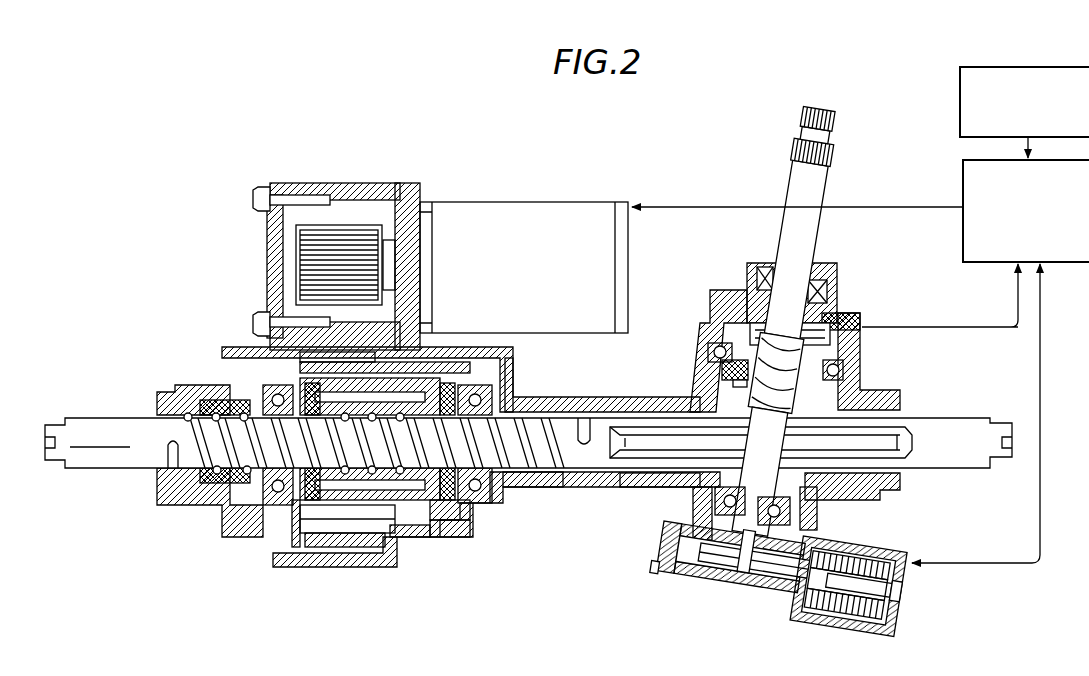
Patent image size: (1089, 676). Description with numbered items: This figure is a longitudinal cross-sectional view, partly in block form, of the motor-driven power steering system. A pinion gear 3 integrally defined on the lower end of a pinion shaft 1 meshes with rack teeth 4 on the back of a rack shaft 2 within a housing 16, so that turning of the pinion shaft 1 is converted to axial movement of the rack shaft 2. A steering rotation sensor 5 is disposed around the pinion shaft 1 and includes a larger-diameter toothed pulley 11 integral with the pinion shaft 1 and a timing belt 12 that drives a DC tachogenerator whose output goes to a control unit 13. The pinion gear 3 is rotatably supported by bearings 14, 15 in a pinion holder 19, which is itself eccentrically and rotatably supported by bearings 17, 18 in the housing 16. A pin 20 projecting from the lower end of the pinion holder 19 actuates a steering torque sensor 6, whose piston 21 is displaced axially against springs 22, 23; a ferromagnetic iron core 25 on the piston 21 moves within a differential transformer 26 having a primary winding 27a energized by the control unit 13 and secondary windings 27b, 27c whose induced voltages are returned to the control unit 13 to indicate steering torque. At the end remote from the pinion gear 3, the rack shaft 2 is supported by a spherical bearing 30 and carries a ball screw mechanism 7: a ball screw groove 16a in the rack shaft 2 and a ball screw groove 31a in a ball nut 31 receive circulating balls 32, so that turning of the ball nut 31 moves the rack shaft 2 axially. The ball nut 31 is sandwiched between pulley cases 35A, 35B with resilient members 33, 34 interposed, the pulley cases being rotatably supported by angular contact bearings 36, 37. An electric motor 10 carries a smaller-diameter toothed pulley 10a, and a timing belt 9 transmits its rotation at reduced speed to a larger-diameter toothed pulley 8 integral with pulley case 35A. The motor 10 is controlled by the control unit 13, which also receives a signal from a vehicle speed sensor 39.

The pinion shaft 1 is at (806, 237).
The rack shaft 2 is at (962, 425).
The pinion gear 3 is at (897, 441).
The rack teeth 4 is at (853, 397).
The steering rotation sensor 5 is at (830, 341).
The steering torque sensor 6 is at (903, 615).
The ball screw mechanism 7 is at (428, 500).
The larger-diameter toothed pulley 8 is at (377, 550).
The timing belt 9 is at (323, 547).
The electric motor 10 is at (497, 207).
The smaller-diameter toothed pulley 10a is at (298, 258).
The larger-diameter toothed pulley 11 is at (843, 322).
The timing belt 12 is at (862, 326).
The control unit 13 is at (981, 263).
The bearing 14 is at (722, 366).
The bearing 15 is at (728, 515).
The housing 16 is at (597, 405).
The ball screw groove 16a is at (532, 423).
The bearing 17 is at (712, 352).
The bearing 18 is at (693, 502).
The pinion holder 19 is at (740, 388).
The pin 20 is at (746, 562).
The piston 21 is at (730, 562).
The spring 22 is at (778, 585).
The spring 23 is at (672, 572).
The ferromagnetic iron core 25 is at (905, 582).
The differential transformer 26 is at (877, 607).
The primary winding 27a is at (907, 557).
The secondary winding 27b is at (877, 547).
The secondary winding 27c is at (857, 527).
The spherical bearing 30 is at (195, 410).
The ball nut 31 is at (423, 512).
The ball screw groove 31a is at (372, 468).
The balls 32 is at (343, 470).
The resilient member 33 is at (483, 528).
The resilient member 34 is at (300, 530).
The pulley case 35A is at (382, 547).
The pulley case 35B is at (445, 523).
The angular contact bearing 36 is at (515, 500).
The angular contact bearing 37 is at (251, 537).
The vehicle speed sensor 39 is at (1027, 66).